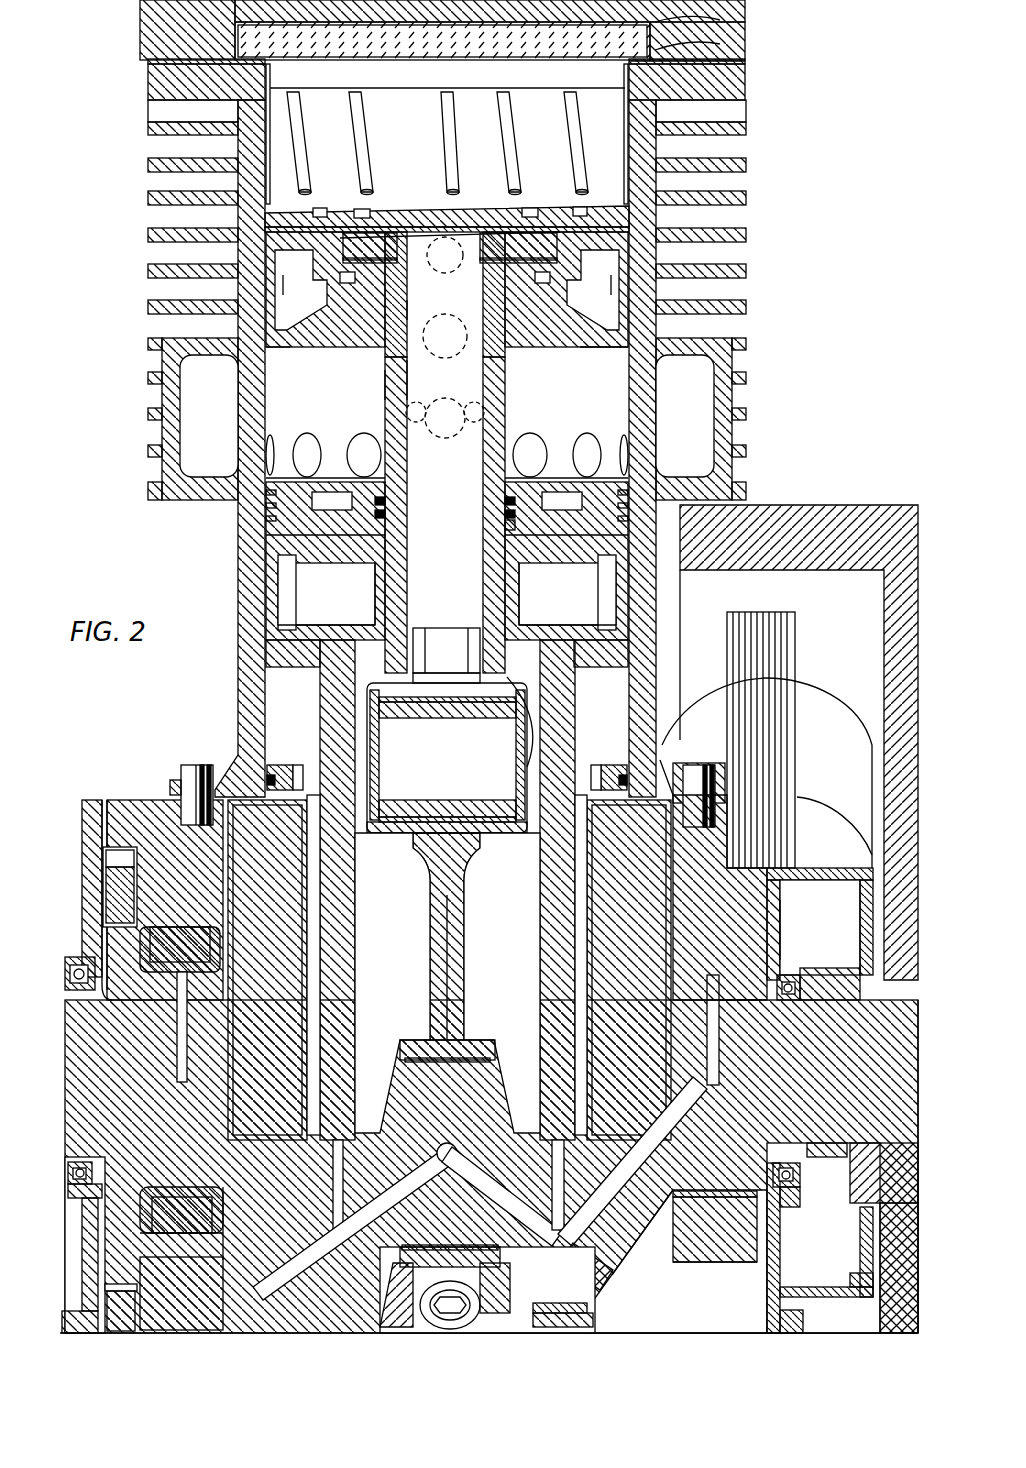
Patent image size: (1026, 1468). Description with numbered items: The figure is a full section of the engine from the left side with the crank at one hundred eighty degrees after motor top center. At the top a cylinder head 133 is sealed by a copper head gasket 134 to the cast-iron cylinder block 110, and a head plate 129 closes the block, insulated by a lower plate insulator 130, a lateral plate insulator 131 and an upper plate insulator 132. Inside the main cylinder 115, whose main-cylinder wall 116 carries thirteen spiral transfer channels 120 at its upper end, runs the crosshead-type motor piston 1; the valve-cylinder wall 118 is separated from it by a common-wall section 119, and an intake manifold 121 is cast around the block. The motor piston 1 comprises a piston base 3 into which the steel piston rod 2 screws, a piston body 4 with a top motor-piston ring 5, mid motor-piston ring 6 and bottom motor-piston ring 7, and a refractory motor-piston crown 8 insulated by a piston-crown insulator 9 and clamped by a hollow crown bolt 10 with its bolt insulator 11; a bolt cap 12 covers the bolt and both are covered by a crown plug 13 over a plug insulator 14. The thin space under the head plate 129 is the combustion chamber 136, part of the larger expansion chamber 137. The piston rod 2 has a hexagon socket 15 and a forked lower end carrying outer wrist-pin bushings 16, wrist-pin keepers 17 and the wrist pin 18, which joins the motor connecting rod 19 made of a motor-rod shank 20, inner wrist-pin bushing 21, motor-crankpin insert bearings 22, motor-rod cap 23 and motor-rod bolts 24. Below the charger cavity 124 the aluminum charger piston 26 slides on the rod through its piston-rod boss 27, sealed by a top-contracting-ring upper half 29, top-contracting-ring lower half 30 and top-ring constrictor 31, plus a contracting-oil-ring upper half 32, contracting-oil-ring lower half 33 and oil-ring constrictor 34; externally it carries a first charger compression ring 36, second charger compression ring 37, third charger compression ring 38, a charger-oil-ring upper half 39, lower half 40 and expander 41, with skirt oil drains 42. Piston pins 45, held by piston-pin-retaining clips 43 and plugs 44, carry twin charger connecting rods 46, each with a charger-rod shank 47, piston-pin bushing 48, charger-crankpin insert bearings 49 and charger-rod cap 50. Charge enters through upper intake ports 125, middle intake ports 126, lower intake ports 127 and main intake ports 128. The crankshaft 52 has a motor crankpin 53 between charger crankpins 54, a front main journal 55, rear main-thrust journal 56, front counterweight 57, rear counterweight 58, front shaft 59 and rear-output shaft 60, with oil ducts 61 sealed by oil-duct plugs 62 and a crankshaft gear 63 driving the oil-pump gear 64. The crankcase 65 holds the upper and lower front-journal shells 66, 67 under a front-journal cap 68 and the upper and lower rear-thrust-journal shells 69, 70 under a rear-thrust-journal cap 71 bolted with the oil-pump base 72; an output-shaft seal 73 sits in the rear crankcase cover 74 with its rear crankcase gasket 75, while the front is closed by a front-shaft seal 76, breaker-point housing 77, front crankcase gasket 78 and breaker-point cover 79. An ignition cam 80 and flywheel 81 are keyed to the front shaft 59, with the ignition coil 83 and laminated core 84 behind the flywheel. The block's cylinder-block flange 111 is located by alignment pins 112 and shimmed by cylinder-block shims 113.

The motor piston 1 is at (430, 195).
The piston rod 2 is at (385, 388).
The piston base 3 is at (595, 347).
The piston body 4 is at (602, 284).
The top motor-piston ring 5 is at (285, 250).
The mid motor-piston ring 6 is at (286, 283).
The bottom motor-piston ring 7 is at (270, 347).
The motor-piston crown 8 is at (303, 214).
The piston-crown insulator 9 is at (572, 252).
The crown bolt 10 is at (404, 372).
The bolt insulator 11 is at (466, 294).
The bolt cap 12 is at (418, 294).
The crown plug 13 is at (376, 213).
The plug insulator 14 is at (476, 218).
The hexagon socket 15 is at (424, 636).
The outer wrist-pin bushing 16 is at (394, 708).
The wrist-pin keeper 17 is at (518, 712).
The wrist pin 18 is at (428, 718).
The motor connecting rod 19 is at (486, 896).
The motor-rod shank 20 is at (470, 938).
The inner wrist-pin bushing 21 is at (430, 814).
The motor-crankpin insert bearings 22 is at (396, 1295).
The motor-rod cap 23 is at (450, 1266).
The motor-rod bolts 24 is at (422, 1318).
The charger piston 26 is at (314, 478).
The piston-rod boss 27 is at (526, 758).
The top-contracting-ring upper half 29 is at (390, 490).
The top-contracting-ring lower half 30 is at (388, 502).
The top-ring constrictor 31 is at (388, 516).
The contracting-oil-ring upper half 32 is at (504, 502).
The contracting-oil-ring lower half 33 is at (504, 516).
The oil-ring constrictor 34 is at (504, 530).
The first charger compression ring 36 is at (266, 494).
The second charger compression ring 37 is at (266, 507).
The third charger compression ring 38 is at (266, 520).
The charger-oil-ring upper half 39 is at (272, 766).
The charger-oil-ring lower half 40 is at (296, 788).
The charger-oil-ring expander 41 is at (602, 764).
The skirt oil drains 42 is at (600, 788).
The piston-pin-retaining clips 43 is at (372, 578).
The piston-pin-retaining plugs 44 is at (296, 572).
The piston pins 45 is at (352, 558).
The charger connecting rods 46 is at (364, 984).
The charger-rod shank 47 is at (356, 882).
The piston-pin bushing 48 is at (330, 628).
The charger-crankpin insert bearings 49 is at (442, 1277).
The charger-rod cap 50 is at (594, 1322).
The crankshaft 52 is at (638, 1262).
The motor crankpin 53 is at (495, 1288).
The charger crankpins 54 is at (533, 1305).
The front main journal 55 is at (733, 990).
The rear main-thrust journal 56 is at (152, 972).
The front counterweight 57 is at (642, 833).
The rear counterweight 58 is at (276, 833).
The front shaft 59 is at (884, 1091).
The rear-output shaft 60 is at (110, 1089).
The crankshaft oil ducts 61 is at (350, 1239).
The oil-duct plugs 62 is at (612, 1280).
The crankshaft gear 63 is at (120, 887).
The oil-pump gear 64 is at (130, 1316).
The crankcase 65 is at (130, 806).
The upper front-journal shell 66 is at (708, 972).
The lower front-journal shell 67 is at (715, 1226).
The front-journal cap 68 is at (736, 1264).
The upper rear-thrust-journal shell 69 is at (174, 968).
The lower rear-thrust-journal shell 70 is at (178, 1198).
The rear-thrust-journal cap 71 is at (194, 1233).
The oil-pump base 72 is at (222, 1306).
The output-shaft seal 73 is at (81, 1247).
The rear crankcase cover 74 is at (72, 812).
The rear crankcase gasket 75 is at (103, 806).
The front-shaft seal 76 is at (800, 980).
The breaker-point housing 77 is at (790, 948).
The front crankcase gasket 78 is at (776, 896).
The breaker-point cover 79 is at (856, 948).
The ignition cam 80 is at (800, 990).
The flywheel 81 is at (712, 572).
The ignition coil 83 is at (852, 704).
The laminated core 84 is at (796, 650).
The cylinder block 110 is at (238, 655).
The cylinder-block flange 111 is at (186, 770).
The alignment pins 112 is at (200, 760).
The cylinder-block shims 113 is at (172, 792).
The main cylinder 115 is at (408, 112).
The main-cylinder wall 116 is at (262, 378).
The valve-cylinder wall 118 is at (440, 85).
The common-wall section 119 is at (438, 85).
The transfer channels 120 is at (298, 128).
The intake manifold 121 is at (200, 498).
The charger cavity 124 is at (340, 413).
The upper intake ports 125 is at (426, 312).
The middle intake ports 126 is at (385, 348).
The lower intake ports 127 is at (440, 438).
The main intake ports 128 is at (272, 446).
The head plate 129 is at (562, 60).
The lower plate insulator 130 is at (628, 60).
The lateral plate insulator 131 is at (720, 44).
The upper plate insulator 132 is at (720, 20).
The cylinder head 133 is at (148, 5).
The head gasket 134 is at (150, 60).
The combustion chamber 136 is at (312, 70).
The expansion chamber 137 is at (492, 175).